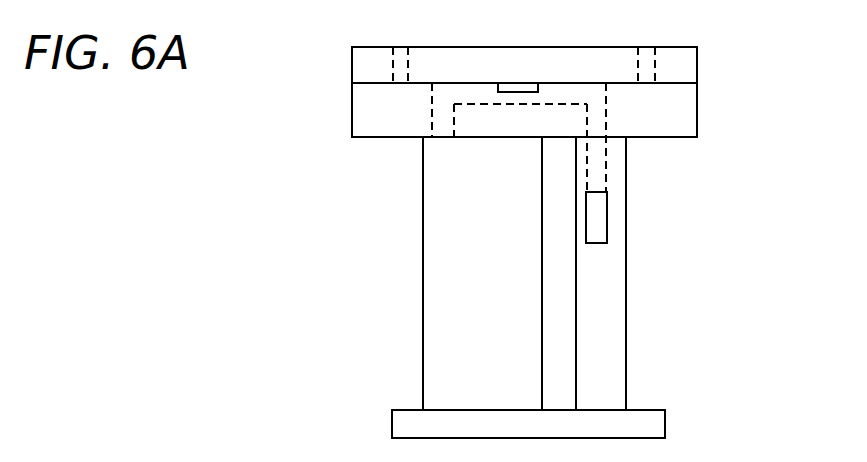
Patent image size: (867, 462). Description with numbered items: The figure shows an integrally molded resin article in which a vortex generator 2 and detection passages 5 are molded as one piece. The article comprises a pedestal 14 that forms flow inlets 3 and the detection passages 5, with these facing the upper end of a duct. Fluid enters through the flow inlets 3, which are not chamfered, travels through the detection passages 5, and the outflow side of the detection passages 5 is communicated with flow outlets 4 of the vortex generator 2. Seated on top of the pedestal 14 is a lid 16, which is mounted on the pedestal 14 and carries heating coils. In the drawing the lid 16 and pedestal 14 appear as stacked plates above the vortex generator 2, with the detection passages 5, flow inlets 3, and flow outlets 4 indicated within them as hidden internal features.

The vortex generator 2 is at (423, 336).
The flow inlets 3 is at (437, 143).
The flow outlets 4 is at (617, 221).
The detection passages 5 is at (560, 92).
The pedestal 14 is at (367, 137).
The lid 16 is at (352, 72).